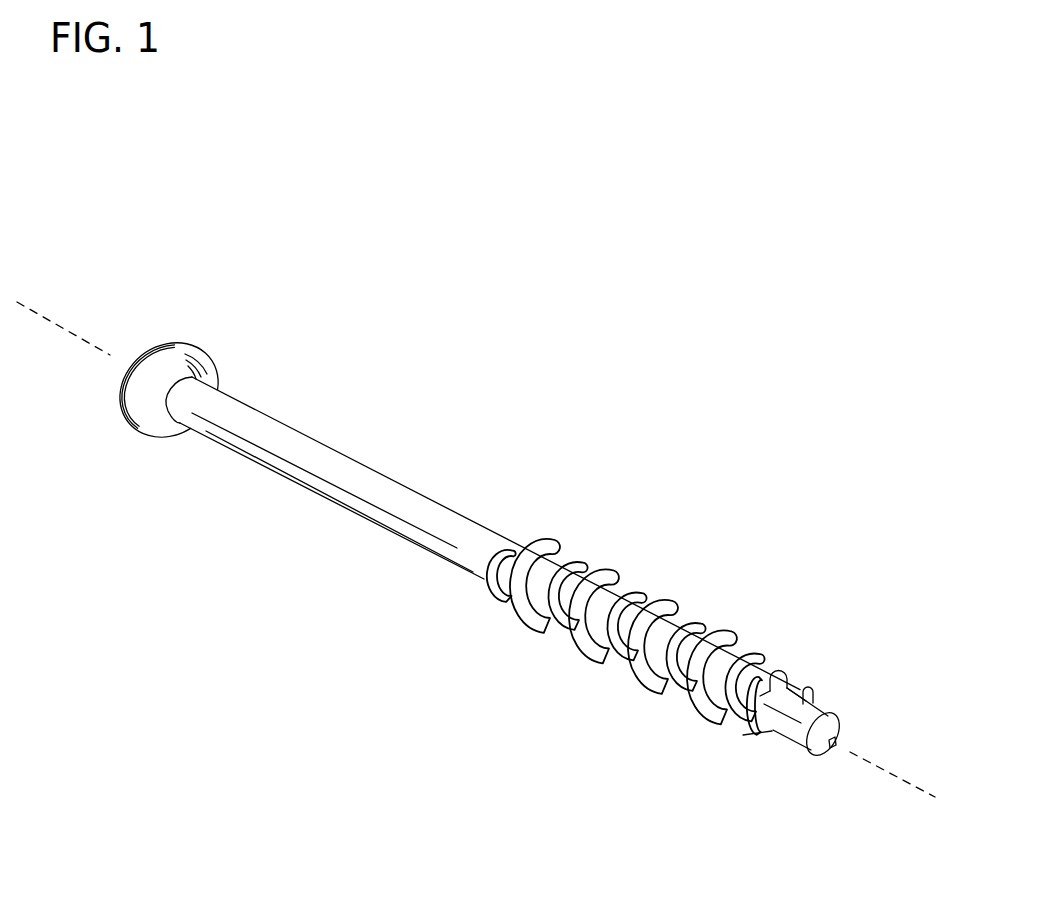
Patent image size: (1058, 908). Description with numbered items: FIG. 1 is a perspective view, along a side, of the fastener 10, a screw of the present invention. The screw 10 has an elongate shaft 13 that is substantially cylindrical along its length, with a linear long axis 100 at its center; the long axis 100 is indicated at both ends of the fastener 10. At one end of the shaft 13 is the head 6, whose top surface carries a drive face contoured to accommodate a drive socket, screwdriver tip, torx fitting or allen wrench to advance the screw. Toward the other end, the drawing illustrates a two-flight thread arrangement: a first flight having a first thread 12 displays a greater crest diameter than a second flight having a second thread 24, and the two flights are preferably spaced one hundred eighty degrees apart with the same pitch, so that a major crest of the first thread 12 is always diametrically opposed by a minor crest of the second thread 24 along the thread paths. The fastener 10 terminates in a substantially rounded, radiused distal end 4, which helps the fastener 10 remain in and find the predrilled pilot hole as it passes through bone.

The long axis 100 is at (52, 316).
The fastener 10 is at (388, 436).
The head 6 is at (197, 337).
The elongate shaft 13 is at (310, 504).
The first thread 12 is at (607, 570).
The second thread 24 is at (635, 590).
The distal end 4 is at (840, 747).